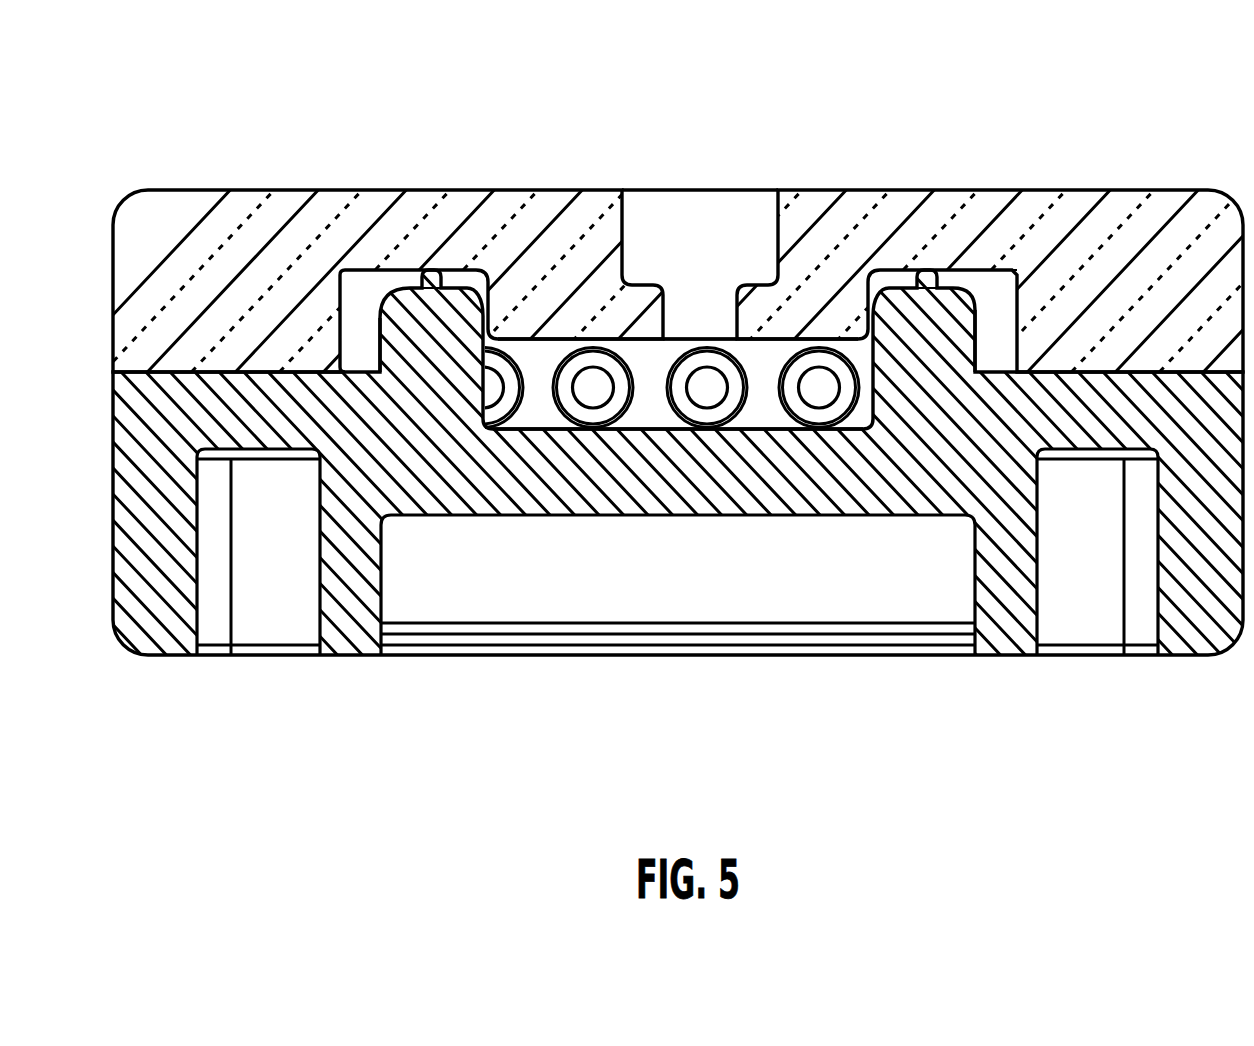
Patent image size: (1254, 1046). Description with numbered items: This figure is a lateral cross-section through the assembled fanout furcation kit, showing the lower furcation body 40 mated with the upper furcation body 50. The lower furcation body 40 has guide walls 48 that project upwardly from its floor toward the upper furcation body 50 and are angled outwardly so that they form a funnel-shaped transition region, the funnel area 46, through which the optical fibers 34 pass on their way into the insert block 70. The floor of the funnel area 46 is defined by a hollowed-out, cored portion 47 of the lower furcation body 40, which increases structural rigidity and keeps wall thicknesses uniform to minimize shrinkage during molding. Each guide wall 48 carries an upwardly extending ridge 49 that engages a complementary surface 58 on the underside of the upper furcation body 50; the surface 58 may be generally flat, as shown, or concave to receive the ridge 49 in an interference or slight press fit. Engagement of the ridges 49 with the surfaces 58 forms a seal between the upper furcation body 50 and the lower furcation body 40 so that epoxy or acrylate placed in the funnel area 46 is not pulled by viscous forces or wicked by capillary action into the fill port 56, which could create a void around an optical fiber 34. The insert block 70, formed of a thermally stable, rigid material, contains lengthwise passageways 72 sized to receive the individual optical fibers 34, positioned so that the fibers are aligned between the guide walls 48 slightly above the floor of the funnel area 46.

The optical fibers 34 is at (593, 385).
The lower furcation body 40 is at (352, 657).
The funnel area 46 is at (652, 410).
The cored portion 47 is at (730, 588).
The guide walls 48 is at (447, 317).
The ridge 49 is at (427, 272).
The upper furcation body 50 is at (1130, 190).
The fill port 56 is at (662, 222).
The surface 58 is at (351, 277).
The insert block 70 is at (538, 363).
The passageways 72 is at (570, 417).